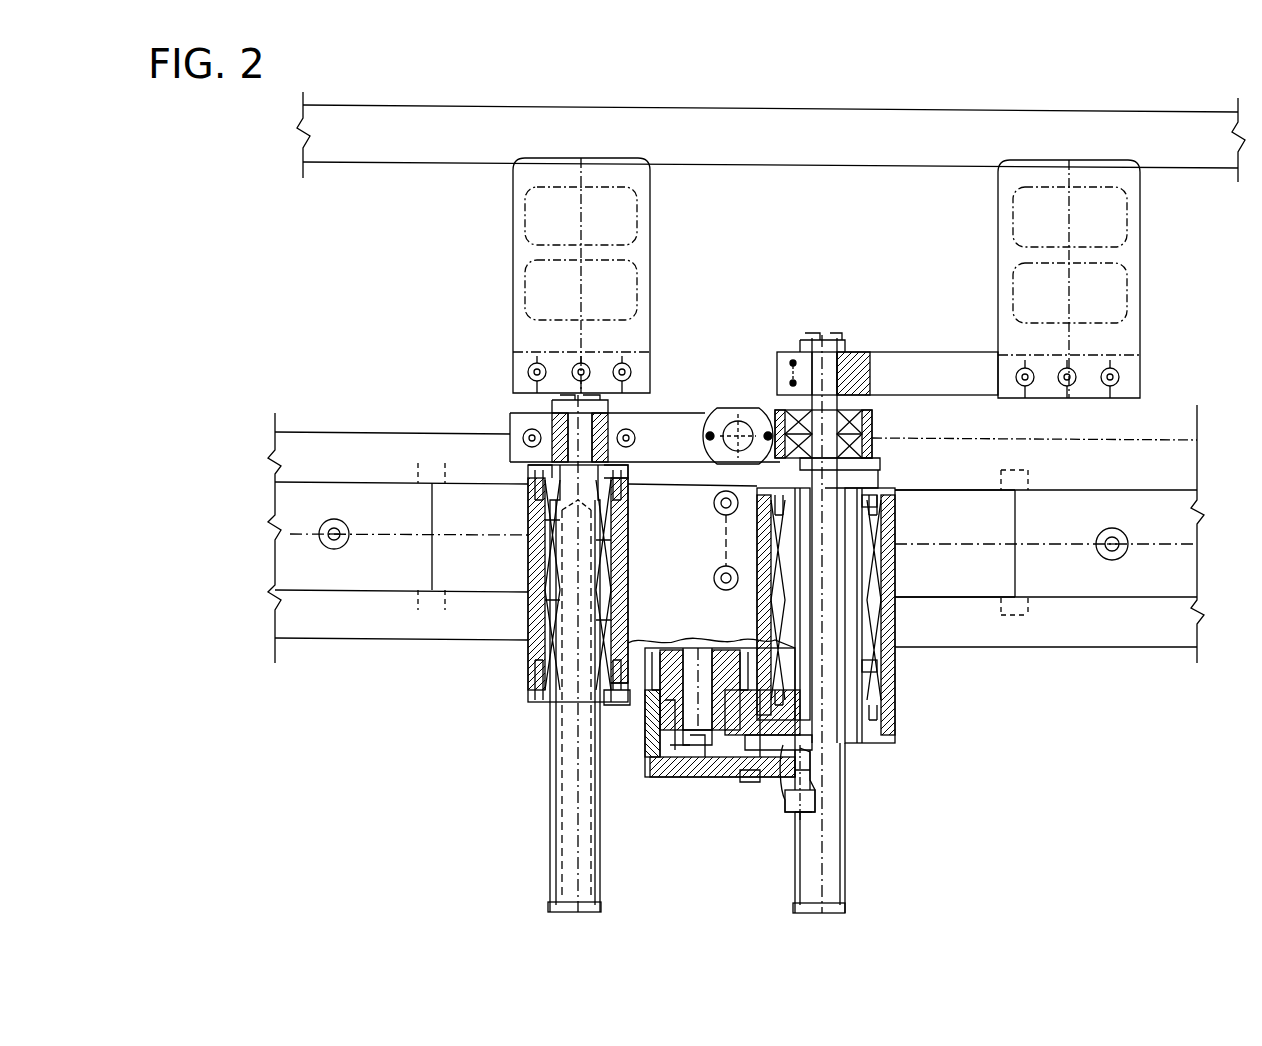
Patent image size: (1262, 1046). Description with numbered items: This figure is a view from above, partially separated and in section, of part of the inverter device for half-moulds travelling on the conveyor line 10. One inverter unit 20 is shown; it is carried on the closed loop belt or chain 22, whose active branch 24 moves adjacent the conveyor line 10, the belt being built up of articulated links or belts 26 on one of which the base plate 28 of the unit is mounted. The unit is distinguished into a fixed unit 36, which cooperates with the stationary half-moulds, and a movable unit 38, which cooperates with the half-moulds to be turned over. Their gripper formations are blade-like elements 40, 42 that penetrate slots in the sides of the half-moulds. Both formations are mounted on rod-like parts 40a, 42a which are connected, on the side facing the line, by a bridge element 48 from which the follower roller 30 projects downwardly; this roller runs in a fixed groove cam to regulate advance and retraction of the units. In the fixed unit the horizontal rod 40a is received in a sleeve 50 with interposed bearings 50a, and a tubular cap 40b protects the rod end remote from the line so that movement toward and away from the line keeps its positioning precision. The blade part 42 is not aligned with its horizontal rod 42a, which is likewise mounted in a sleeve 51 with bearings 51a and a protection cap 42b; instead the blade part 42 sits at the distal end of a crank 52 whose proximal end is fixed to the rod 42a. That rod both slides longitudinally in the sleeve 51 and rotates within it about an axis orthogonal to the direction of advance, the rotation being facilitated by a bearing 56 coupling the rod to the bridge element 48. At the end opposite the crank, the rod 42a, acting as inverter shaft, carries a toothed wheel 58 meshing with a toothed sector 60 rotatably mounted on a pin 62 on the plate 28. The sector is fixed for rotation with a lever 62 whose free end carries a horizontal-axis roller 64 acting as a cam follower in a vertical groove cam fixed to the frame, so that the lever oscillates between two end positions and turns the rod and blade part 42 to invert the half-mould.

The conveyor line 10 is at (340, 165).
The inverter unit 20 is at (525, 708).
The closed loop belt or chain 22 is at (1140, 650).
The active branch 24 is at (990, 575).
The links or belts (track) 26 is at (372, 497).
The base plate 28 is at (714, 508).
The follower roller 30 is at (730, 405).
The fixed unit 36 is at (615, 708).
The movable unit 38 is at (768, 785).
The blade-like element 40 is at (638, 258).
The horizontal rod 40a is at (570, 785).
The tubular cap 40b is at (600, 912).
The blade part 42 is at (1013, 253).
The horizontal rod 42a is at (840, 818).
The protection cap 42b is at (848, 912).
The bridge element 48 is at (667, 430).
The sleeve 50 is at (525, 633).
The bearings 50a is at (550, 610).
The sleeve 51 is at (895, 578).
The bearings 51a is at (893, 500).
The crank 52 is at (925, 372).
The bearing 56 is at (870, 425).
The toothed wheel 58 is at (862, 720).
The toothed sector 60 is at (722, 778).
The pin / lever 62 is at (695, 740).
The roller 64 is at (790, 800).